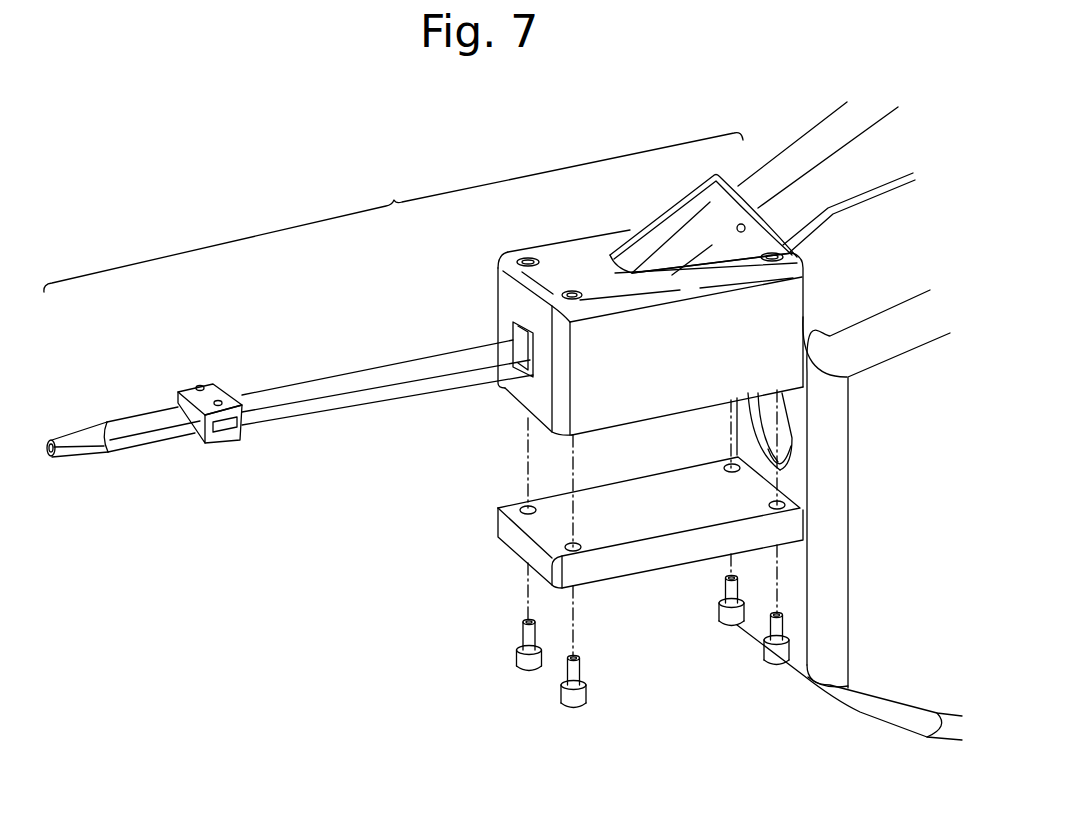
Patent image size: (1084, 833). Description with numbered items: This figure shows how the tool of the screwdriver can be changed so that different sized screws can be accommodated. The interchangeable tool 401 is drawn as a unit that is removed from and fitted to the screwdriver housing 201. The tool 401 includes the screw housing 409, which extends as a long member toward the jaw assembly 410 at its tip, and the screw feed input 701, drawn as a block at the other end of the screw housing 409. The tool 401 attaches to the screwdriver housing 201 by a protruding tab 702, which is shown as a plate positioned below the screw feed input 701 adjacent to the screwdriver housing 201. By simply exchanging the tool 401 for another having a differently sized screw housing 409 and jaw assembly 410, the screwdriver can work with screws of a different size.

The screwdriver housing 201 is at (895, 688).
The tool 401 is at (393, 212).
The screw housing 409 is at (297, 398).
The jaw assembly 410 is at (145, 437).
The screw feed input 701 is at (500, 297).
The protruding tab 702 is at (647, 565).